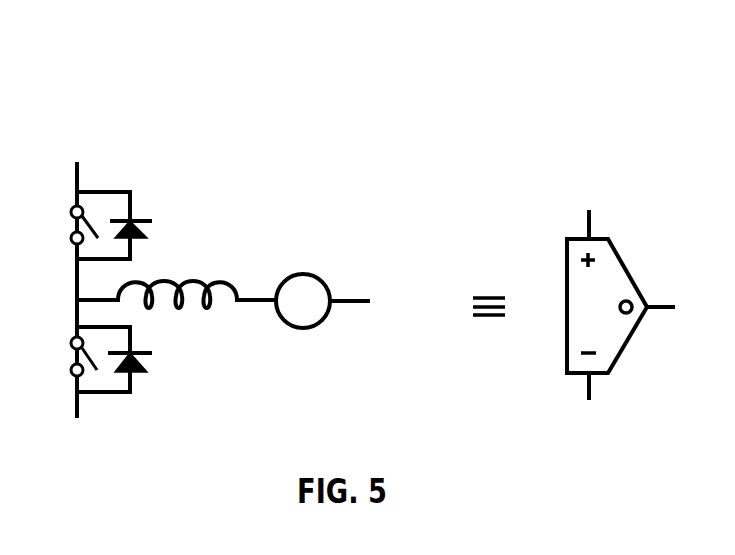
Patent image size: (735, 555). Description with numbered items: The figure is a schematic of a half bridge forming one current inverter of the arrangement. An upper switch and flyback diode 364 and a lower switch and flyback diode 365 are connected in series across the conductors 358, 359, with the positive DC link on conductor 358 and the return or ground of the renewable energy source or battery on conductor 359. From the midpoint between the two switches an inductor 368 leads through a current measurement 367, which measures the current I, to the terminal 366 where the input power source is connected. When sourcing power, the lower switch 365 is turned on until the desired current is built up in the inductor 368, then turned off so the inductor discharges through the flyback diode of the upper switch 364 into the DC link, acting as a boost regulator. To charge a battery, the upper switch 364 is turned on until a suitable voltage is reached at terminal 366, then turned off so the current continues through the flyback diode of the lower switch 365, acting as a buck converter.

The conductor 358 is at (78, 107).
The conductor 359 is at (82, 457).
The upper switch and flyback diode 364 is at (173, 173).
The lower switch and flyback diode 365 is at (168, 412).
The input 366 is at (352, 285).
The current measurement 367 is at (330, 234).
The inductor 368 is at (243, 232).